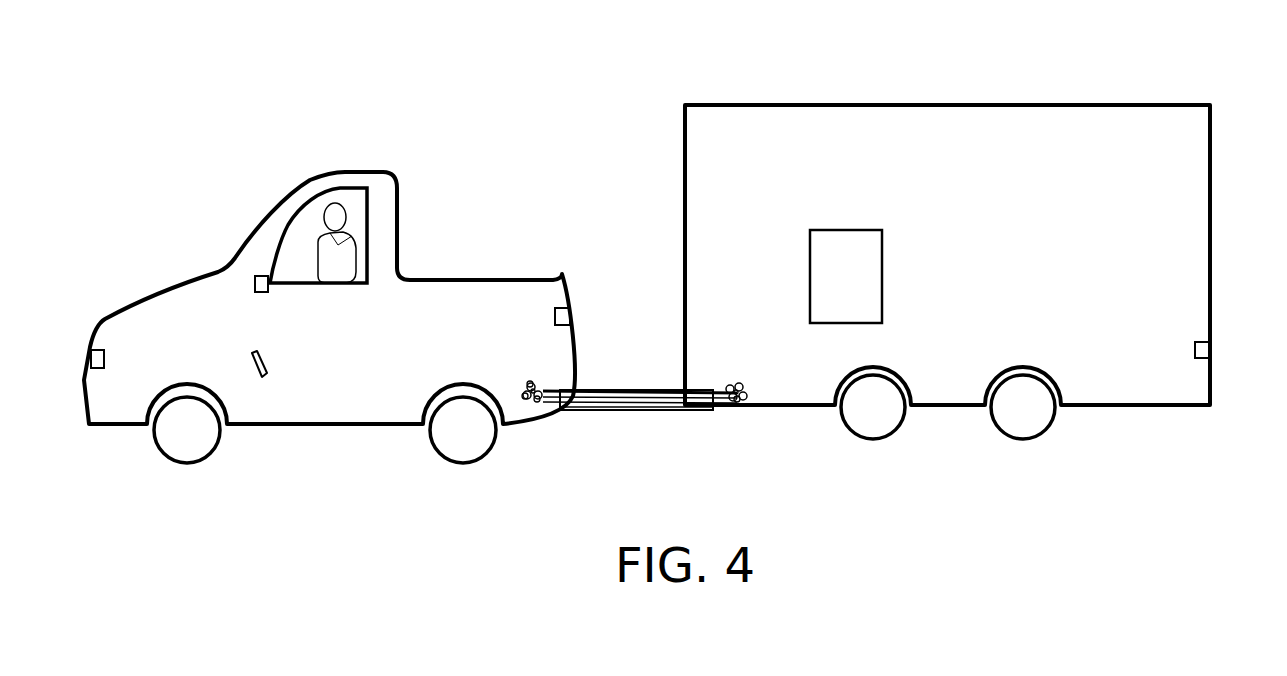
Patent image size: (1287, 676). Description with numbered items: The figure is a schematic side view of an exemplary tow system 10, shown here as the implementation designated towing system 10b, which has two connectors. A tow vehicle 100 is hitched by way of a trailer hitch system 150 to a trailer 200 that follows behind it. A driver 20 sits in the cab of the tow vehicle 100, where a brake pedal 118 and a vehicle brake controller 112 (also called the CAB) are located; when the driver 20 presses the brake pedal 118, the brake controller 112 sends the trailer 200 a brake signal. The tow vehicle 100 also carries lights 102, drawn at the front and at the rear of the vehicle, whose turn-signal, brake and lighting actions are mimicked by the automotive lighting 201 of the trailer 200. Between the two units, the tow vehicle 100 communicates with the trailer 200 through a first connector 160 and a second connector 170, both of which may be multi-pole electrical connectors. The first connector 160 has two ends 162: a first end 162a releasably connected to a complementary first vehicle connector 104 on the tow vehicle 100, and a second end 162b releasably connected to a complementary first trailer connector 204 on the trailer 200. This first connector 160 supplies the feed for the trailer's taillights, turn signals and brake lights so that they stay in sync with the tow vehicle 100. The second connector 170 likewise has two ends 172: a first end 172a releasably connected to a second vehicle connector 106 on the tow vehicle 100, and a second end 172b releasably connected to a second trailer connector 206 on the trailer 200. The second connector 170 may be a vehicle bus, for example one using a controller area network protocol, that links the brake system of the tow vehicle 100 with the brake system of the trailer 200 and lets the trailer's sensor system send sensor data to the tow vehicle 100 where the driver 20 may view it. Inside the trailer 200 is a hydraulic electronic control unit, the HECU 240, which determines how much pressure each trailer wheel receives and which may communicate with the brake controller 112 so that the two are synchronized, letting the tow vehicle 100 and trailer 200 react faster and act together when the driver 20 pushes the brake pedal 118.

The tow system 10 is at (670, 255).
The towing system 10b is at (616, 56).
The driver 20 is at (320, 258).
The tow vehicle 100 is at (350, 172).
The lights 102 is at (105, 359).
The first vehicle connector 104 is at (529, 385).
The second vehicle connector 106 is at (524, 394).
The brake controller 112 is at (262, 293).
The brake pedal 118 is at (263, 378).
The trailer hitch system 150 is at (632, 388).
The first connector 160 is at (607, 411).
The ends of the first connector 162 is at (638, 368).
The first end 162a is at (538, 389).
The second end 162b is at (731, 388).
The second connector 170 is at (677, 411).
The ends of the second connector 172 is at (641, 434).
The first end 172a is at (536, 400).
The second end 172b is at (737, 400).
The trailer 200 is at (764, 105).
The automotive lighting 201 is at (1207, 349).
The first trailer connector 204 is at (744, 384).
The second trailer connector 206 is at (747, 394).
The hydraulic electronic control unit (HECU) 240 is at (846, 276).